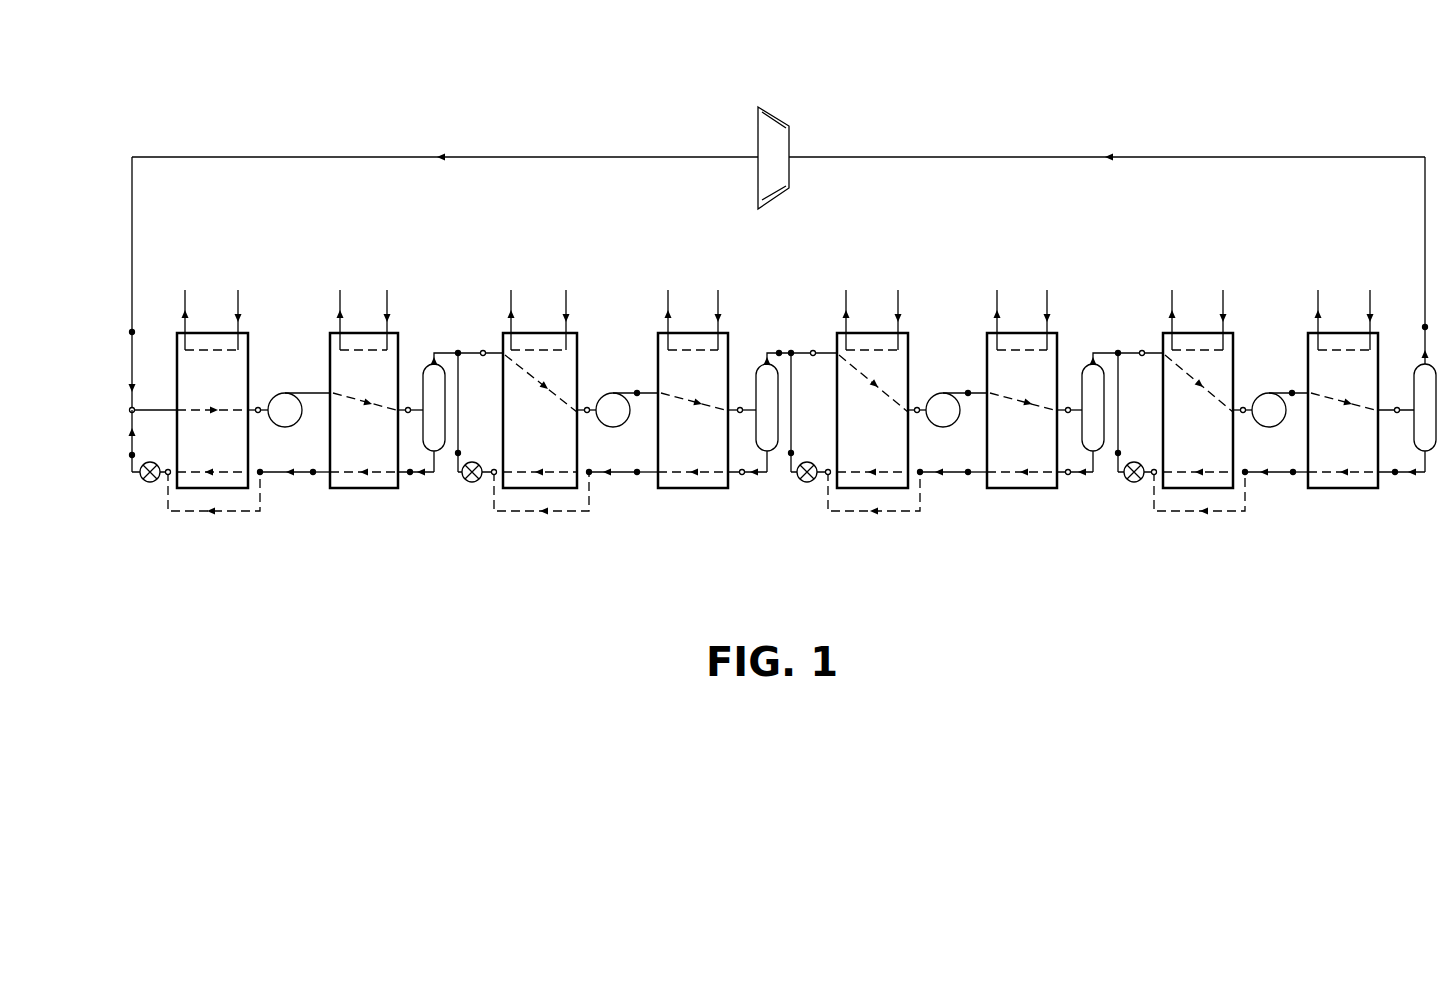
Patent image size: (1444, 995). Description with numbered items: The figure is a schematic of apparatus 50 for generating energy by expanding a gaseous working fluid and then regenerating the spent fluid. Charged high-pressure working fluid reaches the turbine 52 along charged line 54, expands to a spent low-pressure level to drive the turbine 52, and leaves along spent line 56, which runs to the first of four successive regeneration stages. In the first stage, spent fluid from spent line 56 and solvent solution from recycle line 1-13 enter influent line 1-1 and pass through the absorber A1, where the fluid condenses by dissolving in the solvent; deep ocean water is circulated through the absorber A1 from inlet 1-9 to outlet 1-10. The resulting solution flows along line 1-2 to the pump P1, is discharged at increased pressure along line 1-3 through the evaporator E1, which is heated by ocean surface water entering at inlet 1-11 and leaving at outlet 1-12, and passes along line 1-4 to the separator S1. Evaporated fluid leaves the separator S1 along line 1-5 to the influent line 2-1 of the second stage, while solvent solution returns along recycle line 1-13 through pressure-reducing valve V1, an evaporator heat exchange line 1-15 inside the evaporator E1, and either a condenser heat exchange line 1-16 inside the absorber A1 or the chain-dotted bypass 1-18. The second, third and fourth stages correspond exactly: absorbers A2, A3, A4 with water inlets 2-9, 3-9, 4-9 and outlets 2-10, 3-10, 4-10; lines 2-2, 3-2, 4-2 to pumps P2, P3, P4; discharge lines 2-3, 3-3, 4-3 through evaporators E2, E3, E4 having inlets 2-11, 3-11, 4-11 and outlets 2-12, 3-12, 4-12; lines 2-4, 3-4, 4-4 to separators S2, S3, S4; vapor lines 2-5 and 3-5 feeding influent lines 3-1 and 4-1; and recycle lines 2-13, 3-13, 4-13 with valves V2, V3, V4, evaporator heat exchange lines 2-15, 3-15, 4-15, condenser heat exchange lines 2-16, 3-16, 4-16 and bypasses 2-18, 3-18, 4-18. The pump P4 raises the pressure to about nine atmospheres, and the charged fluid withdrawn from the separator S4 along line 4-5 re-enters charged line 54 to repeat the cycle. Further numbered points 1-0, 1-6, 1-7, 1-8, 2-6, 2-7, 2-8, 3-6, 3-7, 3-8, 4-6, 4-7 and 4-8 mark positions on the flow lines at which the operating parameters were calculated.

The apparatus 50 is at (1050, 72).
The turbine 52 is at (788, 140).
The charged line 54 is at (1187, 155).
The spent line 56 is at (512, 152).
The absorber A1 is at (212, 410).
The evaporator E1 is at (364, 410).
The pump P1 is at (285, 410).
The separator S1 is at (434, 455).
The pressure-reducing valve V1 is at (149, 484).
The absorber A2 is at (540, 410).
The evaporator E2 is at (693, 410).
The pump P2 is at (613, 410).
The separator S2 is at (768, 455).
The pressure-reducing valve V2 is at (472, 484).
The absorber A3 is at (872, 410).
The evaporator E3 is at (1022, 410).
The pump P3 is at (943, 410).
The separator S3 is at (1092, 455).
The pressure-reducing valve V3 is at (806, 484).
The absorber A4 is at (1198, 410).
The evaporator E4 is at (1343, 410).
The pump means P4 is at (1269, 410).
The separator S4 is at (1427, 455).
The pressure-reducing valve V4 is at (1133, 484).
The turbine exhaust junction 1-0 is at (134, 330).
The influent line 1-1 is at (134, 407).
The line 1-2 is at (258, 407).
The line 1-3 is at (310, 392).
The line 1-4 is at (408, 407).
The line 1-5 is at (437, 351).
The separator liquid line 1-6 is at (411, 476).
The evaporator return junction 1-7 is at (313, 476).
The valve outlet junction 1-8 is at (131, 458).
The inlet 1-9 is at (240, 292).
The outlet 1-10 is at (186, 292).
The inlet 1-11 is at (388, 292).
The outlet 1-12 is at (341, 292).
The solvent solution recycle line 1-13 is at (273, 476).
The evaporator heat exchange line 1-15 is at (345, 476).
The condenser heat exchange line 1-16 is at (237, 470).
The bypass line 1-18 is at (215, 514).
The influent line 2-1 is at (483, 350).
The line 2-2 is at (587, 407).
The line 2-3 is at (637, 392).
The line 2-4 is at (741, 407).
The line 2-5 is at (779, 350).
The separator liquid line 2-6 is at (743, 476).
The evaporator return junction 2-7 is at (637, 476).
The valve inlet junction 2-8 is at (458, 456).
The inlet 2-9 is at (567, 298).
The outlet 2-10 is at (512, 292).
The inlet 2-11 is at (719, 292).
The outlet 2-12 is at (669, 292).
The solvent solution recycle line 2-13 is at (608, 478).
The evaporator heat exchange line 2-15 is at (705, 478).
The condenser heat exchange line 2-16 is at (560, 470).
The bypass line 2-18 is at (550, 514).
The influent line 3-1 is at (813, 350).
The line 3-2 is at (917, 407).
The line 3-3 is at (968, 392).
The line 3-4 is at (1068, 407).
The line 3-5 is at (1095, 351).
The separator liquid line 3-6 is at (1066, 476).
The evaporator return junction 3-7 is at (968, 476).
The valve inlet junction 3-8 is at (793, 455).
The inlet 3-9 is at (899, 292).
The outlet 3-10 is at (847, 292).
The inlet 3-11 is at (1048, 292).
The outlet 3-12 is at (998, 292).
The solvent solution recycle line 3-13 is at (939, 478).
The evaporator heat exchange line 3-15 is at (1035, 478).
The condenser heat exchange line 3-16 is at (890, 470).
The bypass line 3-18 is at (853, 514).
The influent line 4-1 is at (1142, 350).
The line 4-2 is at (1243, 407).
The line 4-3 is at (1292, 392).
The line 4-4 is at (1397, 407).
The line 4-5 is at (1424, 326).
The separator liquid line 4-6 is at (1394, 476).
The evaporator return junction 4-7 is at (1293, 476).
The valve inlet junction 4-8 is at (1120, 456).
The inlet 4-9 is at (1224, 295).
The outlet 4-10 is at (1173, 292).
The inlet 4-11 is at (1369, 292).
The outlet 4-12 is at (1319, 292).
The solvent solution recycle line 4-13 is at (1255, 478).
The evaporator heat exchange line 4-15 is at (1328, 478).
The condenser heat exchange line 4-16 is at (1220, 470).
The bypass line 4-18 is at (1175, 514).